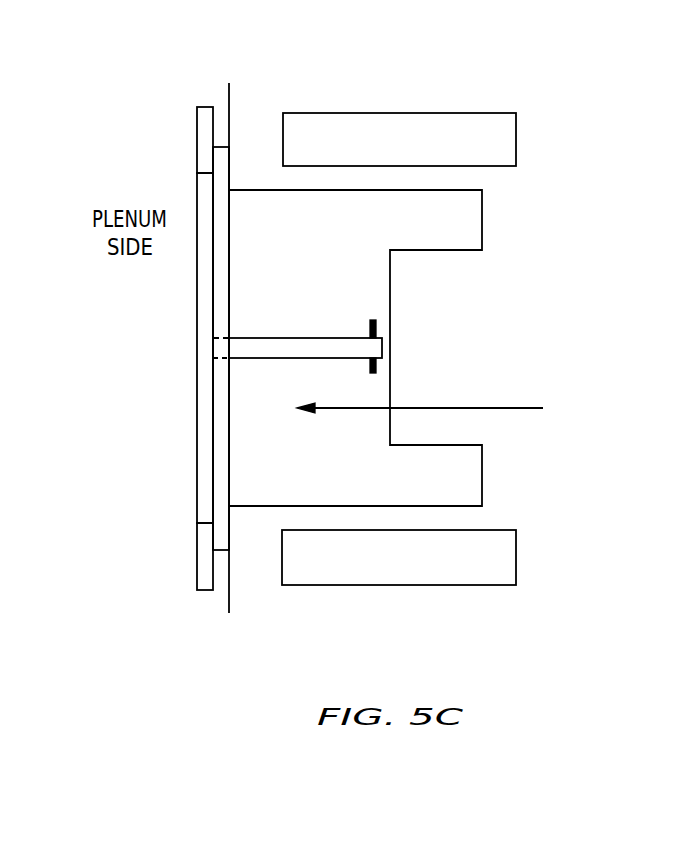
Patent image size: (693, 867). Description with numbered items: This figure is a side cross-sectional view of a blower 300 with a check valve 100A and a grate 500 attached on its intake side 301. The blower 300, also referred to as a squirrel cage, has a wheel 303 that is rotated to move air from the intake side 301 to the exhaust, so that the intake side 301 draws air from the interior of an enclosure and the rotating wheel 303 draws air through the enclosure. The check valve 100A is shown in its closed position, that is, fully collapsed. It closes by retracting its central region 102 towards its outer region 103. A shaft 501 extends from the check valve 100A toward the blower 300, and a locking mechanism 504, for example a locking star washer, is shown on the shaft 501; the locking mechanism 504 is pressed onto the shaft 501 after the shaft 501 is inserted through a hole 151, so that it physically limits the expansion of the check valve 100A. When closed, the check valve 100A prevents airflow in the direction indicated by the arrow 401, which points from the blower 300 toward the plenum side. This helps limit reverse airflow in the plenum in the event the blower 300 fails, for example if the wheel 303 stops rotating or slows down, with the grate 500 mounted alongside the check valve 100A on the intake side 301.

The check valve 100A is at (223, 147).
The central region 102 is at (212, 372).
The outer region 103 is at (213, 173).
The hole 151 is at (222, 347).
The blower 300 is at (527, 70).
The intake side 301 is at (250, 413).
The wheel 303 is at (401, 113).
The arrow 401 is at (498, 408).
The grate 500 is at (197, 559).
The shaft 501 is at (267, 338).
The locking mechanism 504 is at (373, 320).